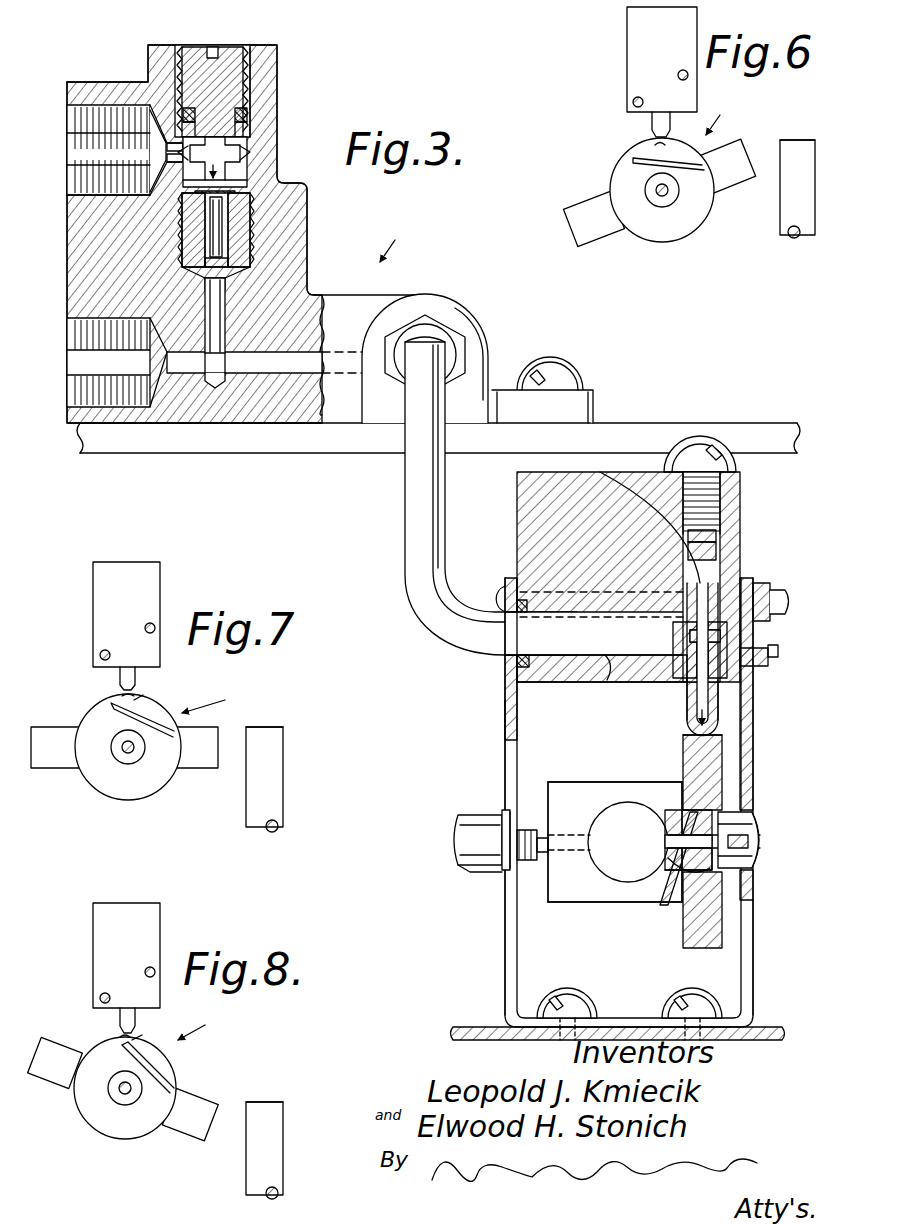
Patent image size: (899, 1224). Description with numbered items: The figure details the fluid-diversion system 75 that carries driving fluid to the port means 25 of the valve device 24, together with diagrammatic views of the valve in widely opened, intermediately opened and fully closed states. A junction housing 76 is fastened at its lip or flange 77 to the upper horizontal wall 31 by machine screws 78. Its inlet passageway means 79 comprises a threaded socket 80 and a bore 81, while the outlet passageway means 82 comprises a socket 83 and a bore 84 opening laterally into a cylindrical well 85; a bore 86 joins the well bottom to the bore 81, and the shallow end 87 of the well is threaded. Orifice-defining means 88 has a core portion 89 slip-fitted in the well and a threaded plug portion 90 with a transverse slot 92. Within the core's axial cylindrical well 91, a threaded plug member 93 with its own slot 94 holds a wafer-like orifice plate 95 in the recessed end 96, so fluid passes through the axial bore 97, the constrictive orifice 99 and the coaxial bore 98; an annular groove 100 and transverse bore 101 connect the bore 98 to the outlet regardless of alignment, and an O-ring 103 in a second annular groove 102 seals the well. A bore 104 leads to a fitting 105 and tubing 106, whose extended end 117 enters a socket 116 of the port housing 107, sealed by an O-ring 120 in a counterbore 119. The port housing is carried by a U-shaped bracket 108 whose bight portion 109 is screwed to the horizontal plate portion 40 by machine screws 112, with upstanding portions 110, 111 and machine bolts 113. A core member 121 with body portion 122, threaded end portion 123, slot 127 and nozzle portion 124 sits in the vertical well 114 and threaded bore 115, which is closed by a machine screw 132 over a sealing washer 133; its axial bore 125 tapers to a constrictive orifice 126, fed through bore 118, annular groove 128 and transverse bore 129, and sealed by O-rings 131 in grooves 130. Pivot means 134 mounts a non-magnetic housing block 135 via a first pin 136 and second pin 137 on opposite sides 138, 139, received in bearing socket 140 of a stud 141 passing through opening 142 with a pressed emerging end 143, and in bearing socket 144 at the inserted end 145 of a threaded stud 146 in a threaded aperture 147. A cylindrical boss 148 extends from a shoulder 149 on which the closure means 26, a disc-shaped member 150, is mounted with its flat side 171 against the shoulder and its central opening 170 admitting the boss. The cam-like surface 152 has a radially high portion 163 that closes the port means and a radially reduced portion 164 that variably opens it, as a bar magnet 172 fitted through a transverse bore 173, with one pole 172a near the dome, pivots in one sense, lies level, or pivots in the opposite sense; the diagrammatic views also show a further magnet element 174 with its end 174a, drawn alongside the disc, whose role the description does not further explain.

In FIG. 6, the valve device 24 is at (600, 100).
In FIG. 7, the valve device 24 is at (42, 645).
In FIG. 3, the port means 25 is at (666, 730).
In FIG. 6, the port means 25 is at (648, 130).
In FIG. 7, the port means 25 is at (104, 684).
In FIG. 8, the port means 25 is at (82, 1000).
In FIG. 3, the closure means 26 is at (673, 907).
In FIG. 6, the closure means 26 is at (725, 112).
In FIG. 7, the closure means 26 is at (219, 697).
In FIG. 8, the closure means 26 is at (206, 1022).
In FIG. 3, the upper horizontal wall 31 is at (640, 420).
In FIG. 3, the horizontal plate portion 40 is at (470, 1030).
In FIG. 3, the fluid-diversion system 75 is at (392, 242).
In FIG. 3, the junction housing 76 is at (308, 268).
In FIG. 3, the lip or flange 77 is at (586, 416).
In FIG. 3, the machine screws 78 is at (540, 378).
In FIG. 3, the inlet passageway means 79 is at (64, 360).
In FIG. 3, the threaded socket 80 is at (80, 322).
In FIG. 3, the bore 81 is at (195, 368).
In FIG. 3, the outlet passageway means 82 is at (64, 148).
In FIG. 3, the socket 83 is at (80, 186).
In FIG. 3, the bore 84 is at (148, 140).
In FIG. 3, the cylindrical well 85 is at (236, 193).
In FIG. 3, the bore 86 is at (222, 323).
In FIG. 3, the shallow end 87 is at (262, 52).
In FIG. 3, the orifice-defining means 88 is at (176, 236).
In FIG. 3, the core portion 89 is at (192, 252).
In FIG. 3, the threaded plug portion 90 is at (232, 47).
In FIG. 3, the axial cylindrical well 91 is at (190, 220).
In FIG. 3, the transverse slot 92 is at (212, 45).
In FIG. 3, the threaded plug member 93 is at (192, 268).
In FIG. 3, the transverse slot 94 is at (202, 284).
In FIG. 3, the orifice plate 95 is at (240, 205).
In FIG. 3, the recessed end 96 is at (195, 197).
In FIG. 3, the axial bore 97 is at (228, 234).
In FIG. 3, the coaxial bore 98 is at (222, 178).
In FIG. 3, the constrictive orifice 99 is at (228, 150).
In FIG. 3, the annular groove 100 is at (180, 150).
In FIG. 3, the transverse bore 101 is at (180, 160).
In FIG. 3, the annular groove 102 is at (248, 112).
In FIG. 3, the O-ring 103 is at (246, 124).
In FIG. 3, the bore 104 is at (265, 370).
In FIG. 3, the fitting 105 is at (433, 333).
In FIG. 3, the tubing 106 is at (405, 498).
In FIG. 3, the port housing 107 is at (517, 488).
In FIG. 3, the U-shaped bracket 108 is at (503, 926).
In FIG. 3, the bight portion 109 is at (625, 1018).
In FIG. 3, the upstanding portion 110 is at (748, 970).
In FIG. 3, the upstanding portion 111 is at (512, 970).
In FIG. 3, the machine screws 112 is at (680, 995).
In FIG. 3, the machine bolts 113 is at (505, 532).
In FIG. 3, the vertical well 114 is at (748, 590).
In FIG. 3, the threaded bore 115 is at (708, 528).
In FIG. 3, the socket 116 is at (555, 590).
In FIG. 3, the extended end 117 is at (530, 683).
In FIG. 3, the bore 118 is at (608, 682).
In FIG. 3, the annular counterbore 119 is at (508, 674).
In FIG. 3, the O-ring 120 is at (515, 660).
In FIG. 3, the core member 121 is at (684, 700).
In FIG. 3, the body portion 122 is at (690, 622).
In FIG. 3, the threaded end portion 123 is at (712, 546).
In FIG. 3, the nozzle portion 124 is at (720, 692).
In FIG. 3, the axial bore 125 is at (720, 705).
In FIG. 3, the constrictive orifice 126 is at (700, 724).
In FIG. 3, the transverse slot 127 is at (672, 505).
In FIG. 3, the annular groove 128 is at (696, 645).
In FIG. 3, the transverse bore 129 is at (695, 630).
In FIG. 3, the annular grooves 130 is at (768, 660).
In FIG. 3, the O-rings 131 is at (778, 650).
In FIG. 3, the machine screw 132 is at (715, 440).
In FIG. 3, the sealing washer 133 is at (728, 470).
In FIG. 3, the pivot means 134 is at (456, 842).
In FIG. 3, the housing block 135 is at (548, 782).
In FIG. 3, the first pin 136 is at (676, 800).
In FIG. 3, the second pin 137 is at (540, 850).
In FIG. 3, the side 138 is at (750, 840).
In FIG. 3, the side 139 is at (565, 915).
In FIG. 3, the bearing socket 140 is at (752, 856).
In FIG. 3, the stud 141 is at (706, 806).
In FIG. 3, the opening 142 is at (722, 815).
In FIG. 3, the emerging end 143 is at (758, 820).
In FIG. 3, the bearing socket 144 is at (552, 828).
In FIG. 3, the inserted end 145 is at (528, 828).
In FIG. 3, the threaded stud 146 is at (500, 866).
In FIG. 3, the threaded aperture 147 is at (510, 810).
In FIG. 3, the cylindrical boss 148 is at (715, 862).
In FIG. 3, the shoulder 149 is at (716, 892).
In FIG. 3, the disc-shaped member 150 is at (680, 748).
In FIG. 6, the disc-shaped member 150 is at (675, 240).
In FIG. 7, the disc-shaped member 150 is at (120, 800).
In FIG. 8, the disc-shaped member 150 is at (102, 1138).
In FIG. 6, the cam-like surface 152 is at (670, 143).
In FIG. 7, the cam-like surface 152 is at (145, 696).
In FIG. 8, the cam-like surface 152 is at (145, 1036).
In FIG. 7, the radially high portion 163 is at (110, 700).
In FIG. 8, the radially high portion 163 is at (118, 1032).
In FIG. 6, the radially reduced portion 164 is at (632, 158).
In FIG. 7, the radially reduced portion 164 is at (160, 700).
In FIG. 8, the radially reduced portion 164 is at (165, 1052).
In FIG. 3, the central opening 170 is at (628, 842).
In FIG. 3, the flat side 171 is at (683, 940).
In FIG. 3, the bar magnet 172 is at (605, 903).
In FIG. 6, the bar magnet 172 is at (570, 208).
In FIG. 7, the bar magnet 172 is at (58, 760).
In FIG. 8, the bar magnet 172 is at (42, 1078).
In FIG. 6, the pole 172a is at (735, 185).
In FIG. 7, the pole 172a is at (204, 762).
In FIG. 8, the pole 172a is at (193, 1137).
In FIG. 3, the transverse bore 173 is at (610, 792).
In FIG. 6, the auxiliary magnet 174 is at (790, 236).
In FIG. 7, the auxiliary magnet 174 is at (270, 808).
In FIG. 8, the auxiliary magnet 174 is at (283, 1186).
In FIG. 6, the auxiliary magnet end 174a is at (797, 140).
In FIG. 7, the auxiliary magnet end 174a is at (280, 733).
In FIG. 8, the auxiliary magnet end 174a is at (280, 1102).